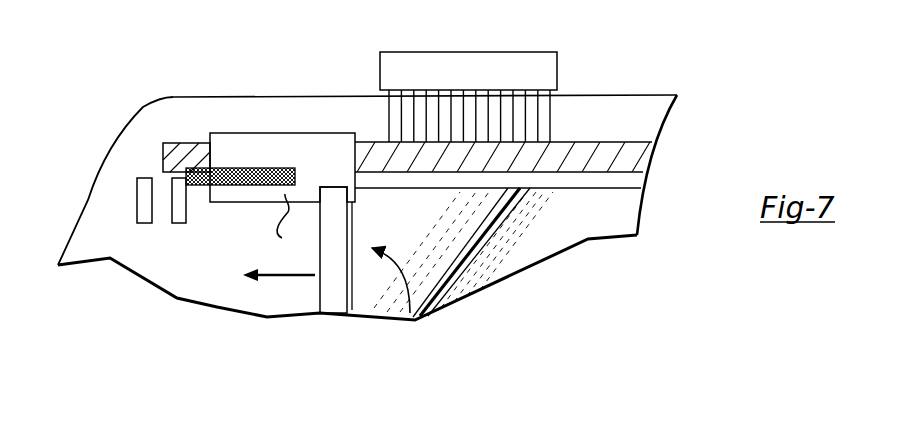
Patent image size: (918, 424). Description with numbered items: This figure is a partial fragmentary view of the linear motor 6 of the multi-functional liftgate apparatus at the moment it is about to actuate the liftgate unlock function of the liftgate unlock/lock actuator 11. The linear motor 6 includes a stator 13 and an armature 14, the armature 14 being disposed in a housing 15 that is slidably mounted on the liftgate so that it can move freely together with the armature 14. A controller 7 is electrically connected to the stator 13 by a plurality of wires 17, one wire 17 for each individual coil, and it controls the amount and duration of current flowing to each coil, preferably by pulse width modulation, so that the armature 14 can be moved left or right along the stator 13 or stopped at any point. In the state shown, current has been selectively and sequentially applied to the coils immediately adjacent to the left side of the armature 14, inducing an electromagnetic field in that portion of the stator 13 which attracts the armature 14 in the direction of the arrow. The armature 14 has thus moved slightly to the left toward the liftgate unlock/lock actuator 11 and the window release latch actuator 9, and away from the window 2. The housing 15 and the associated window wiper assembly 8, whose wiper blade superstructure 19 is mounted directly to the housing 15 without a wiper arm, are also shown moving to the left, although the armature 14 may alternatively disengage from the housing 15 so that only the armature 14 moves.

The rear window or backlite 2 is at (611, 222).
The linear motor 6 is at (281, 118).
The controller 7 is at (437, 60).
The window wiper assembly 8 is at (412, 315).
The window release latch or lock actuator 9 is at (143, 229).
The liftgate unlock/lock actuator 11 is at (178, 229).
The stator 13 is at (193, 153).
The armature 14 is at (226, 185).
The housing 15 is at (293, 226).
The wires 17 is at (562, 113).
The wiper blade superstructure 19 is at (342, 293).